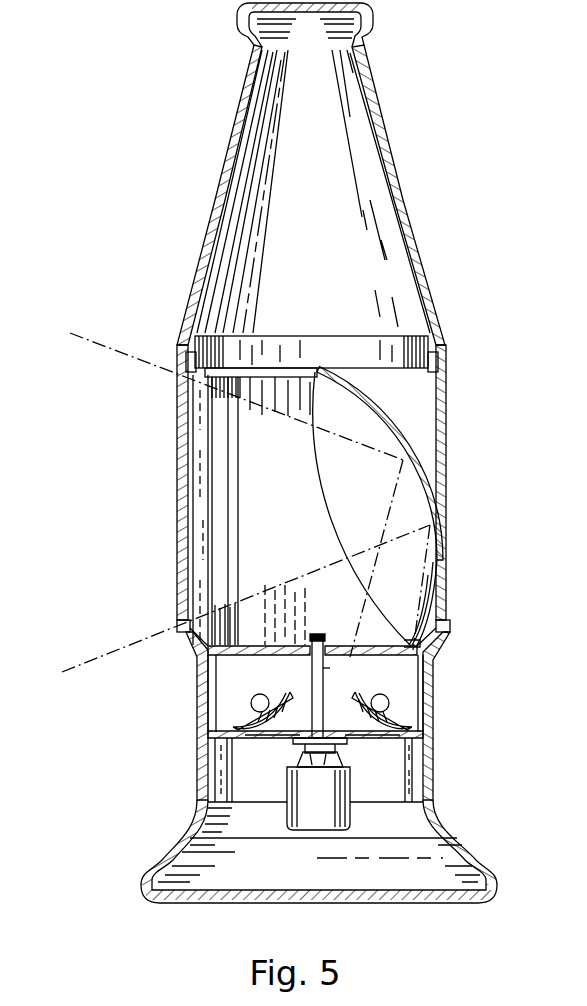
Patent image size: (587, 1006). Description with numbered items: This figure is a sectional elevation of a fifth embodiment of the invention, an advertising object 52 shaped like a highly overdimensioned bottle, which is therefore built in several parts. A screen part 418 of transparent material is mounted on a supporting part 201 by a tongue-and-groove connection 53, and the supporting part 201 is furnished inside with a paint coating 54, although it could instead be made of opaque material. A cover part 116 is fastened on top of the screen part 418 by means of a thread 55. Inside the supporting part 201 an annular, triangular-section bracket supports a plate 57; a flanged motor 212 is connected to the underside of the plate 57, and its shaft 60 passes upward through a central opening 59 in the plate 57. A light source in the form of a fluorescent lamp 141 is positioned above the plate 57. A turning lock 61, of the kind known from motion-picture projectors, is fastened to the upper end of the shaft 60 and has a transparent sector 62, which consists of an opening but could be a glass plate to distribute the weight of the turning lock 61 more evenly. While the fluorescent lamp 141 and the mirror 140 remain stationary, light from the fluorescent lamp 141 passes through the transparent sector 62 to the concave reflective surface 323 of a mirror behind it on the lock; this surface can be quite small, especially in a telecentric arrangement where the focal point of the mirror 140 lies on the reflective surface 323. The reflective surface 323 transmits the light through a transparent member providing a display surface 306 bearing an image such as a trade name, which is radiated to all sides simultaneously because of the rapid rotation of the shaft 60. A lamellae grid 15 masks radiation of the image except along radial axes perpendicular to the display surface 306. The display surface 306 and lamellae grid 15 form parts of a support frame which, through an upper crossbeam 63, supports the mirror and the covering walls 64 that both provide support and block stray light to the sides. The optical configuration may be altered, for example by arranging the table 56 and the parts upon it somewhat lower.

The advertising object 52 is at (421, 149).
The cover part 116 is at (214, 224).
The paint coating 54 is at (402, 262).
The upper crossbeam 63 is at (292, 373).
The thread 55 is at (440, 370).
The reflective surface 323 is at (362, 399).
The display surface 306 is at (192, 462).
The lamellae grid 15 is at (232, 472).
The covering walls 64 is at (274, 508).
The screen part 418 is at (177, 523).
The tongue-and-groove connection 53 is at (448, 613).
The turning lock 61 is at (268, 646).
The central opening 59 is at (312, 718).
The shaft 60 is at (326, 668).
The fluorescent lamp 141 is at (265, 696).
The mirror 140 is at (242, 722).
The transparent sector 62 is at (436, 666).
The supporting part 201 is at (198, 766).
The plate 57 is at (258, 745).
The table 56 is at (392, 742).
The flanged motor 212 is at (292, 800).